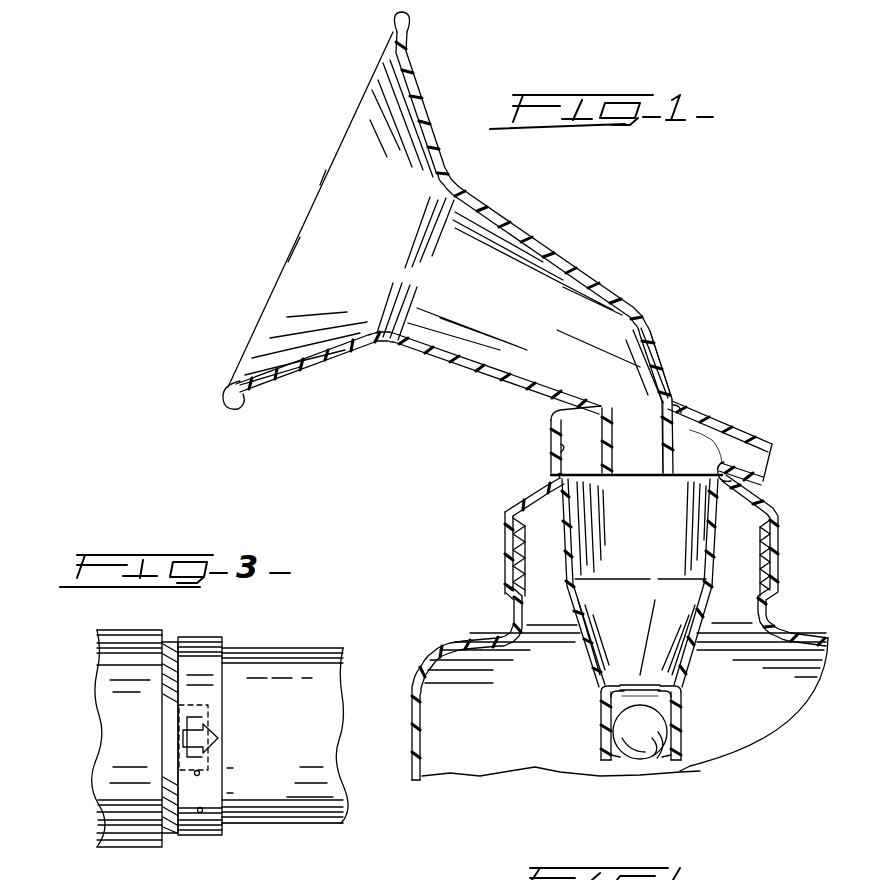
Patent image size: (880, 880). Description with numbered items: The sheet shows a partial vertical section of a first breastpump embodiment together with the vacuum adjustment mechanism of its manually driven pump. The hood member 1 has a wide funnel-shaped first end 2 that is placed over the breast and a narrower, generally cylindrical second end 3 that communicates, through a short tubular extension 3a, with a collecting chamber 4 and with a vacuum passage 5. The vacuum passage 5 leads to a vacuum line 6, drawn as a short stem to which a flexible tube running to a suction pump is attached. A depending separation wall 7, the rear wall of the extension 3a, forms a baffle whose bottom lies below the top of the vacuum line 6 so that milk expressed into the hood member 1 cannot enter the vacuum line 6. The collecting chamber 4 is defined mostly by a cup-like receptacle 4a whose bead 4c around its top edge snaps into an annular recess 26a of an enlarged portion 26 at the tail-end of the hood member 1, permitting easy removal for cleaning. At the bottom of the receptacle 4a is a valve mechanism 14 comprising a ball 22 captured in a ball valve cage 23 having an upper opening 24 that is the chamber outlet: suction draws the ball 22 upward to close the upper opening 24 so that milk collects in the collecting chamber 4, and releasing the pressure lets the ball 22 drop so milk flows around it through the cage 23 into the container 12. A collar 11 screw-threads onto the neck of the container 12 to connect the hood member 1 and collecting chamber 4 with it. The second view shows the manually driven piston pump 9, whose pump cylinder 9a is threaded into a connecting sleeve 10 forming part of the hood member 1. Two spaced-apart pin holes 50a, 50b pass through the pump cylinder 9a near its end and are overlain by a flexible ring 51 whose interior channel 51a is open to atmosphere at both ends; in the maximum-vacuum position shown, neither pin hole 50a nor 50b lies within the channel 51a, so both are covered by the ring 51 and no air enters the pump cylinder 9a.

In FIG. 1, the hood member 1 is at (427, 78).
In FIG. 1, the first end 2 is at (234, 411).
In FIG. 1, the second end 3 is at (660, 348).
In FIG. 1, the tubular extension 3a is at (602, 458).
In FIG. 1, the collecting chamber 4 is at (637, 497).
In FIG. 1, the collection chamber receptacle 4a is at (585, 630).
In FIG. 1, the bead 4c is at (556, 482).
In FIG. 1, the vacuum passage 5 is at (695, 430).
In FIG. 1, the vacuum line 6 is at (757, 440).
In FIG. 1, the separation wall 7 is at (660, 412).
In FIG. 1, the collar 11 is at (505, 532).
In FIG. 1, the container 12 is at (430, 660).
In FIG. 1, the valve mechanism 14 is at (682, 710).
In FIG. 1, the ball 22 is at (665, 742).
In FIG. 1, the ball valve cage 23 is at (600, 722).
In FIG. 1, the upper opening 24 is at (643, 686).
In FIG. 1, the enlarged portion 26 is at (561, 448).
In FIG. 1, the annular recess 26a is at (738, 481).
In FIG. 3, the piston pump 9 is at (305, 644).
In FIG. 3, the pump cylinder 9a is at (293, 823).
In FIG. 3, the connecting sleeve 10 is at (130, 630).
In FIG. 3, the pin hole 50a is at (200, 814).
In FIG. 3, the pin hole 50b is at (194, 773).
In FIG. 3, the ring 51 is at (220, 637).
In FIG. 3, the interior channel 51a is at (206, 711).